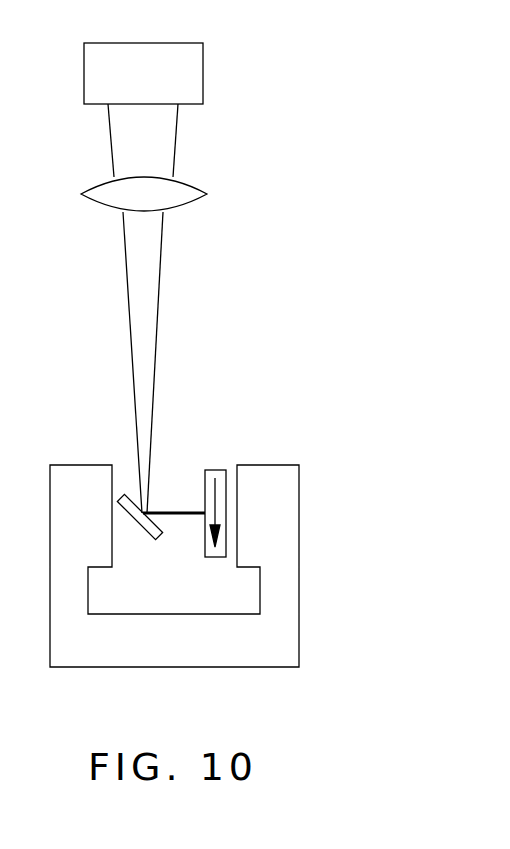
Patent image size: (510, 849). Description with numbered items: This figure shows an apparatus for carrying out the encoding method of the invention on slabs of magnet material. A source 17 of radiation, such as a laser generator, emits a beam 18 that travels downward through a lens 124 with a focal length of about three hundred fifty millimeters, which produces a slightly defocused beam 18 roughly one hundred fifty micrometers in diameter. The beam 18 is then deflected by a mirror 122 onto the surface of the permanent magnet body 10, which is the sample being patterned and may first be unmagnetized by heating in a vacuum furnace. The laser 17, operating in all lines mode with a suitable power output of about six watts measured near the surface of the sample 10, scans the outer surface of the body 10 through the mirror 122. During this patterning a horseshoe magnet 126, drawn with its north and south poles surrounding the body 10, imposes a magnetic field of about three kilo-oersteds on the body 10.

The source of radiation 17 is at (203, 62).
The beam 18 is at (177, 155).
The lens 124 is at (185, 208).
The mirror 122 is at (130, 497).
The permanent magnet body 10 is at (214, 458).
The horseshoe magnet 126 is at (260, 462).